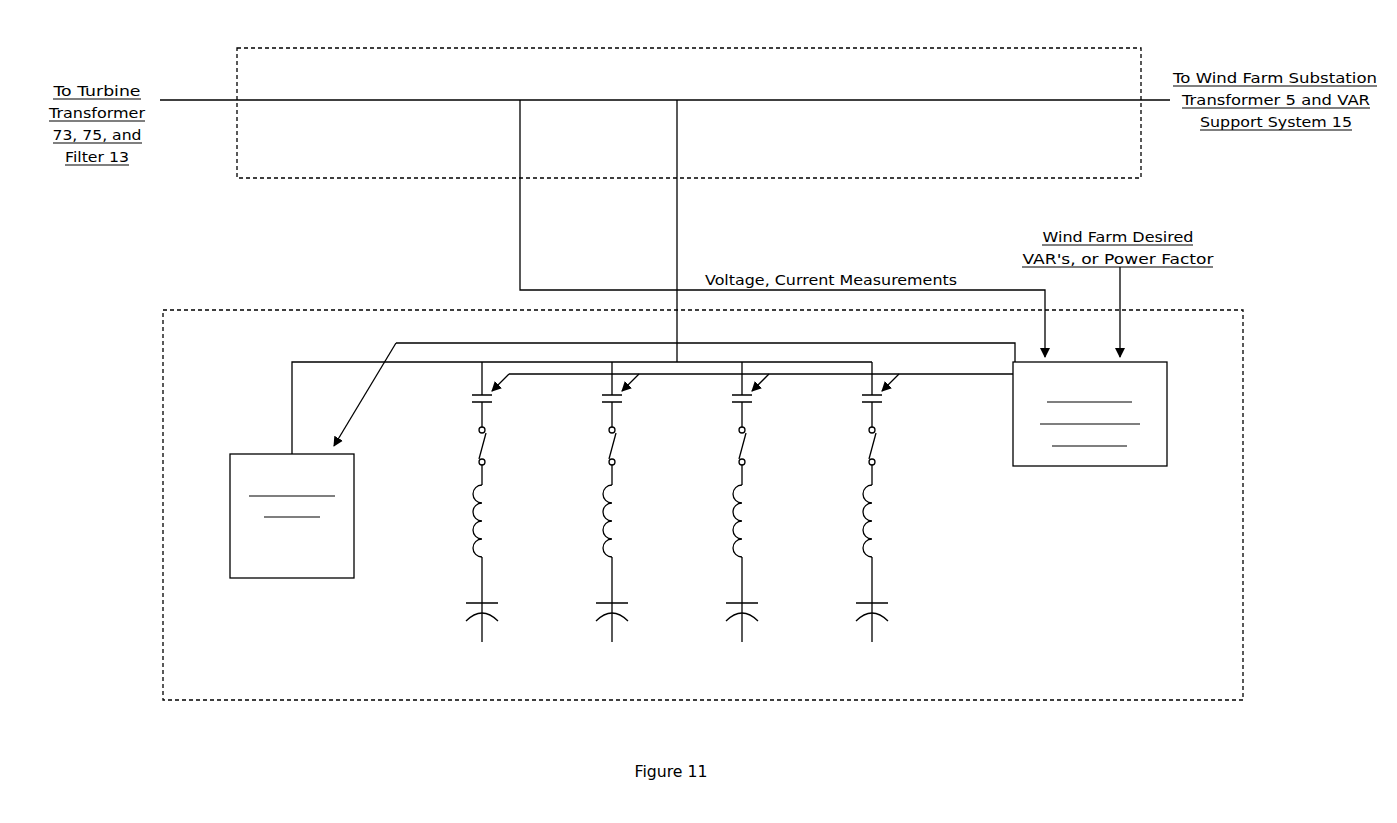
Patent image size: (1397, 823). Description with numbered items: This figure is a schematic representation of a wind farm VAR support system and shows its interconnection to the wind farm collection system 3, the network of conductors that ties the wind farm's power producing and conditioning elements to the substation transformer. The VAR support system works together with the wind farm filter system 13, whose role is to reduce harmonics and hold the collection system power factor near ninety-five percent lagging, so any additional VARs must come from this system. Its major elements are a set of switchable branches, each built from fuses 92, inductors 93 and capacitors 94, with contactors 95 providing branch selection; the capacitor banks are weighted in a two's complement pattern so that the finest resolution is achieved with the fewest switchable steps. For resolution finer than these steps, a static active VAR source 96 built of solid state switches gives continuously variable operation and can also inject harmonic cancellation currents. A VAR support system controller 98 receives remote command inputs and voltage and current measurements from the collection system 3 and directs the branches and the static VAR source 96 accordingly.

The wind farm collection system 3 is at (1040, 44).
The wind farm filter system 13 is at (1186, 306).
The fuses 92 is at (842, 455).
The inductors 93 is at (842, 524).
The capacitors 94 is at (842, 615).
The contactors 95 is at (842, 405).
The static active VAR source 96 is at (258, 452).
The VAR support system controller 98 is at (1057, 472).